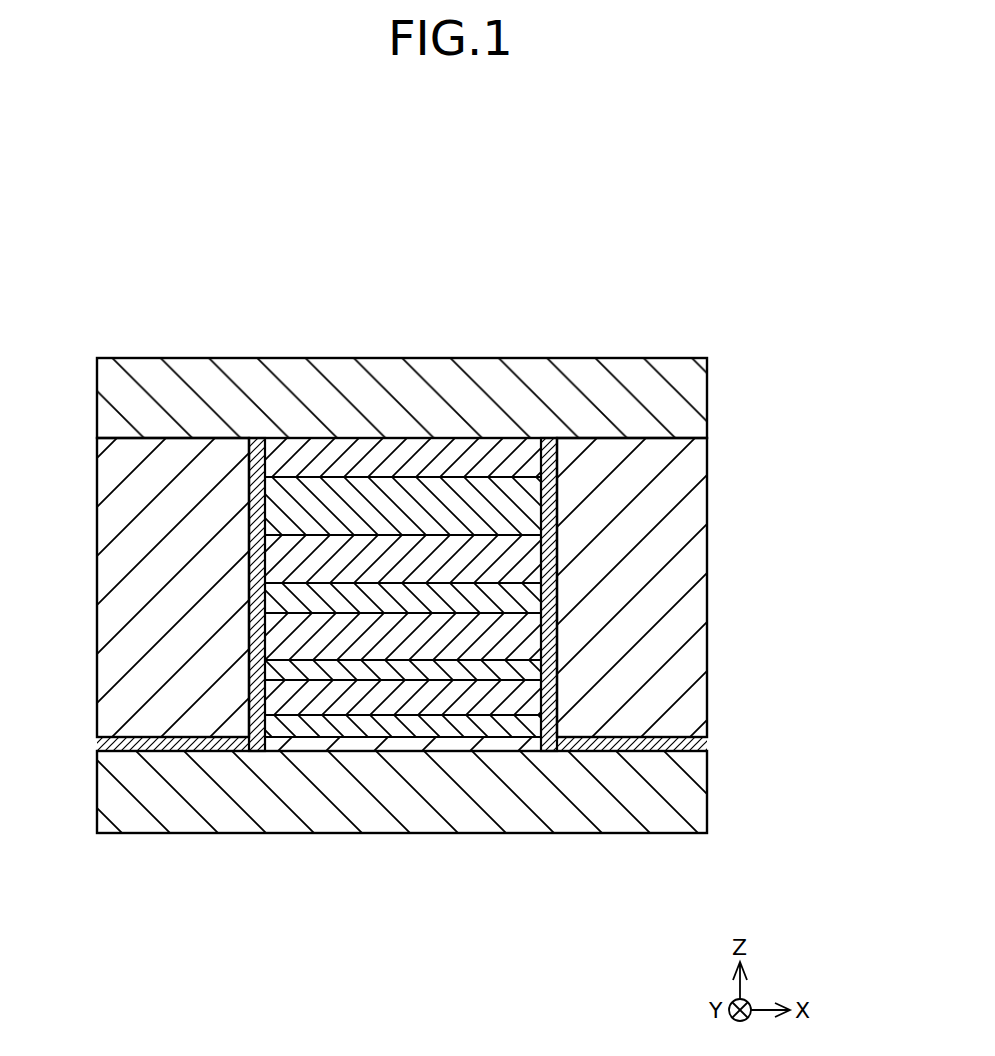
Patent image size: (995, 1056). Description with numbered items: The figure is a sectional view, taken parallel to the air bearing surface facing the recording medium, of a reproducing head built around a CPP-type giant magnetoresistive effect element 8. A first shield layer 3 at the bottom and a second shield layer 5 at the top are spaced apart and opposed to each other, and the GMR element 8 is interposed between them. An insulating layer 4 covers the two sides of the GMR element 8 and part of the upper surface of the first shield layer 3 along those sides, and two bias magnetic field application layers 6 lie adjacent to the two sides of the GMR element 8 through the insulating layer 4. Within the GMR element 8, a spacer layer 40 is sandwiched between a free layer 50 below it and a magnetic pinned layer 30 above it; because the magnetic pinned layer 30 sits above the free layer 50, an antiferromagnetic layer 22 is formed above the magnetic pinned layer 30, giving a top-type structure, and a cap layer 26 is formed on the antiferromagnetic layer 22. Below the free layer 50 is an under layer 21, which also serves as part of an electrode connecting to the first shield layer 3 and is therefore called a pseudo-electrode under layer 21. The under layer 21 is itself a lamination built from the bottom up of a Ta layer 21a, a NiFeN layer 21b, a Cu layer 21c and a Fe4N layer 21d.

The first shield layer 3 is at (223, 813).
The insulating layer 4 is at (279, 440).
The second shield layer 5 is at (200, 383).
The bias magnetic field application layer 6 is at (122, 643).
The giant magnetoresistive effect element 8 is at (463, 437).
The under layer 21 is at (815, 713).
The Ta layer 21a is at (543, 753).
The NiFeN layer 21b is at (550, 757).
The Cu layer 21c is at (556, 747).
The Fe4N layer 21d is at (550, 745).
The antiferromagnetic layer 22 is at (523, 520).
The cap layer 26 is at (523, 463).
The magnetic pinned layer 30 is at (523, 570).
The spacer layer 40 is at (523, 597).
The free layer 50 is at (523, 643).